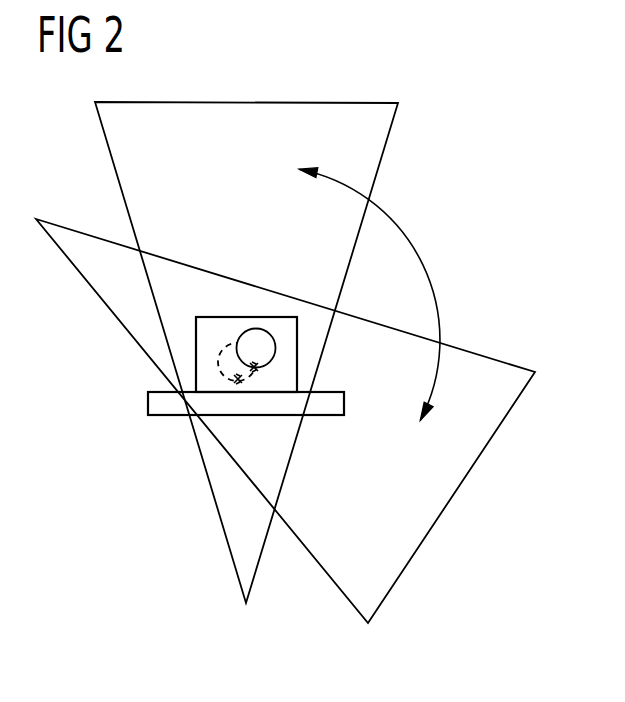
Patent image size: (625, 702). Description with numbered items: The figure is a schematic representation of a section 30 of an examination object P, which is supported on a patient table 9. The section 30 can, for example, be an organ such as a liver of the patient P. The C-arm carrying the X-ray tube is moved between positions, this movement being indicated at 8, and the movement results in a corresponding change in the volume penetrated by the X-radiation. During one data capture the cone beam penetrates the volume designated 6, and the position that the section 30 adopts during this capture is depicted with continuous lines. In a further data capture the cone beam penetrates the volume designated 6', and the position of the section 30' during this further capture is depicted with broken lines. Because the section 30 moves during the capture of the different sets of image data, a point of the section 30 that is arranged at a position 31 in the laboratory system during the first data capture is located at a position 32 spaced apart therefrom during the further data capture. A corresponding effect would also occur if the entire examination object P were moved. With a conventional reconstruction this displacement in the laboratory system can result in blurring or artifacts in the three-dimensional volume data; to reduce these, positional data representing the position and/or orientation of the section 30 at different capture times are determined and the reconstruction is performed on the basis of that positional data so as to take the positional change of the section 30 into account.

The cone beam volume 6 is at (261, 352).
The changed volume penetrated by the X-radiation 6' is at (285, 421).
The movement of the C-arm 8 is at (417, 256).
The patient table 9 is at (346, 404).
The examination object P is at (247, 315).
The section of the examination object 30 is at (269, 311).
The section in further position 30' is at (217, 330).
The position of a point of the section 31 is at (262, 368).
The spaced-apart position of the point 32 is at (242, 383).